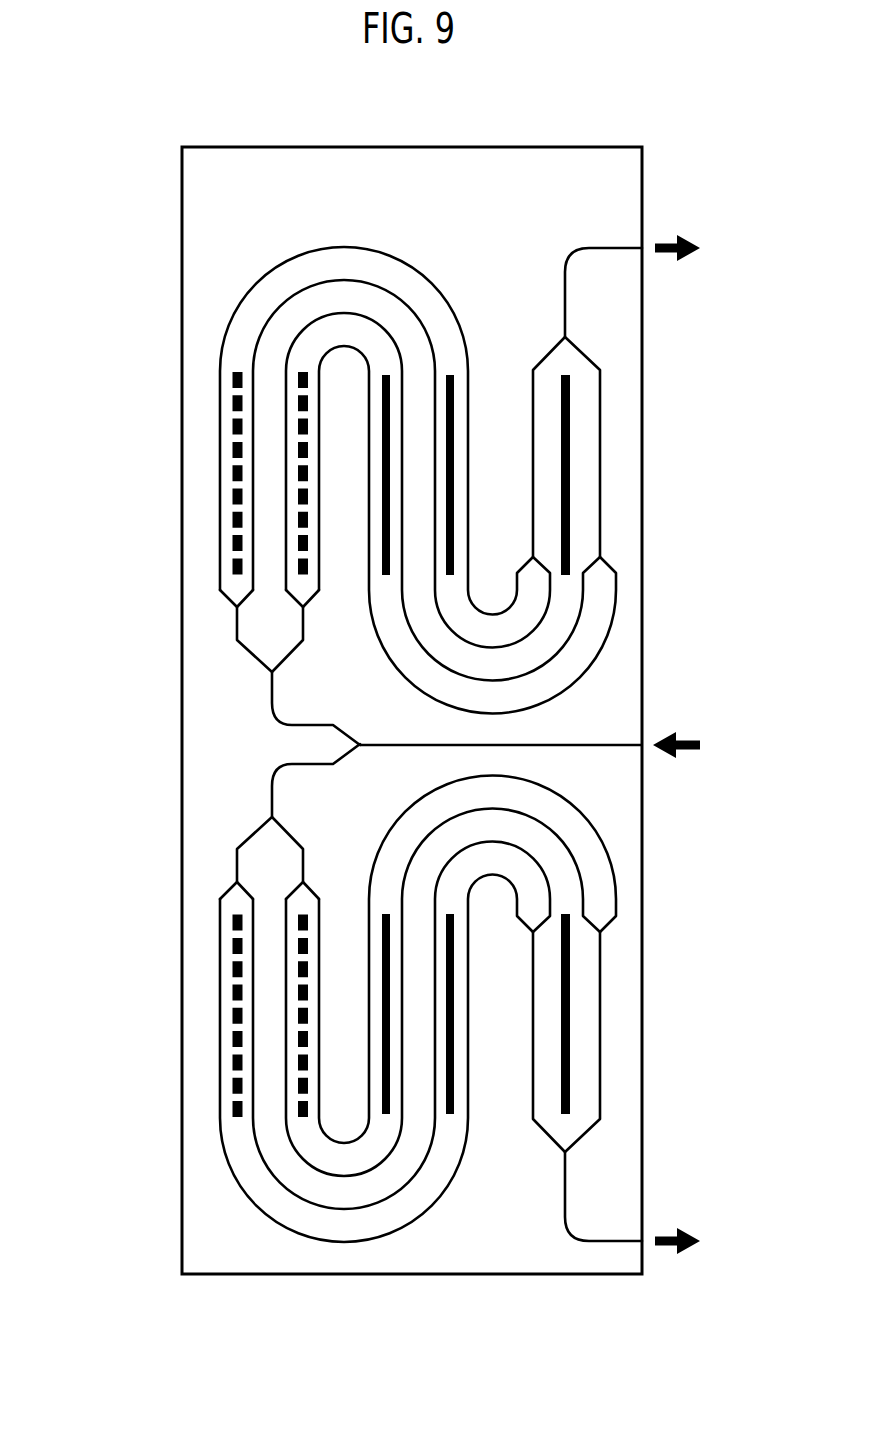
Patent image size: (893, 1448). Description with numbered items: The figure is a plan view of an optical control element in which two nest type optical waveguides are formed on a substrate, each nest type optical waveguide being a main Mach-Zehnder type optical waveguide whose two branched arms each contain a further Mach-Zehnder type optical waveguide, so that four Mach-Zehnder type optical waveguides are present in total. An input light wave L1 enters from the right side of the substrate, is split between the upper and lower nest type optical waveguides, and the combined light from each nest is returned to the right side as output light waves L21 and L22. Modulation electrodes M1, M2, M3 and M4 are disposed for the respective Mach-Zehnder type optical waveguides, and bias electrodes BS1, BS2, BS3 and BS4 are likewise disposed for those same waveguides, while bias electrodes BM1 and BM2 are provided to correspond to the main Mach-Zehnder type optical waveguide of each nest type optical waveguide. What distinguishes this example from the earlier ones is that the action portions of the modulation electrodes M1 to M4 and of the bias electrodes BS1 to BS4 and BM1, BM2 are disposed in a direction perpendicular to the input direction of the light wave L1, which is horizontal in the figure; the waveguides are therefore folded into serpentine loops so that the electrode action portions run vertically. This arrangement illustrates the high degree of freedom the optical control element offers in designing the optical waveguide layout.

The input light L1 is at (547, 748).
The output light L21 is at (702, 252).
The output light L22 is at (702, 1245).
The modulation electrode M1 is at (235, 452).
The modulation electrode M2 is at (300, 543).
The modulation electrode M3 is at (235, 967).
The modulation electrode M4 is at (300, 1060).
The bias electrode BS1 is at (455, 412).
The bias electrode BS2 is at (390, 412).
The bias electrode BS3 is at (455, 1068).
The bias electrode BS4 is at (390, 1072).
The bias electrode BM1 is at (568, 447).
The bias electrode BM2 is at (568, 1021).